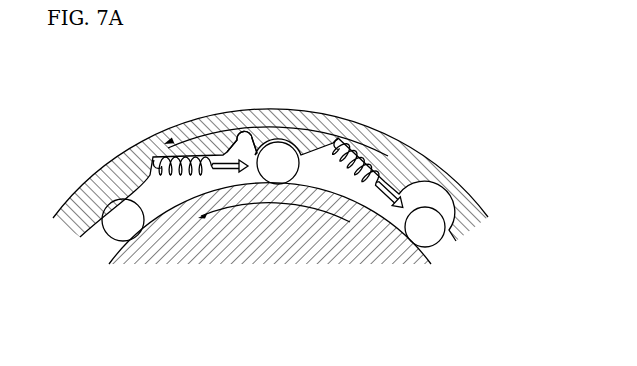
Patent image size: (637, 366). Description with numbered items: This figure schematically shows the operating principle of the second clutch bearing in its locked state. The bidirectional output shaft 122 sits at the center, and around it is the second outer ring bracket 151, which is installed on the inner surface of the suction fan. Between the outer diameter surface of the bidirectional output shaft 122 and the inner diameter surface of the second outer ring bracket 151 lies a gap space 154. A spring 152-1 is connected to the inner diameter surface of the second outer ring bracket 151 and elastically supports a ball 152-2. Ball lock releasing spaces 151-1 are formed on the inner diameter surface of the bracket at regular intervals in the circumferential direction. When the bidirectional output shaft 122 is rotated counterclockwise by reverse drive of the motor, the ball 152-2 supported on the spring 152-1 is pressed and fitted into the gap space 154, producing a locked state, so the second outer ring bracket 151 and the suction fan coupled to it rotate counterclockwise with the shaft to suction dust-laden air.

The second outer ring bracket 151 is at (124, 176).
The ball lock releasing space 151-1 is at (232, 150).
The spring 152-1 is at (363, 178).
The ball 152-2 is at (278, 160).
The gap space 154 is at (195, 188).
The bidirectional output shaft 122 is at (315, 240).